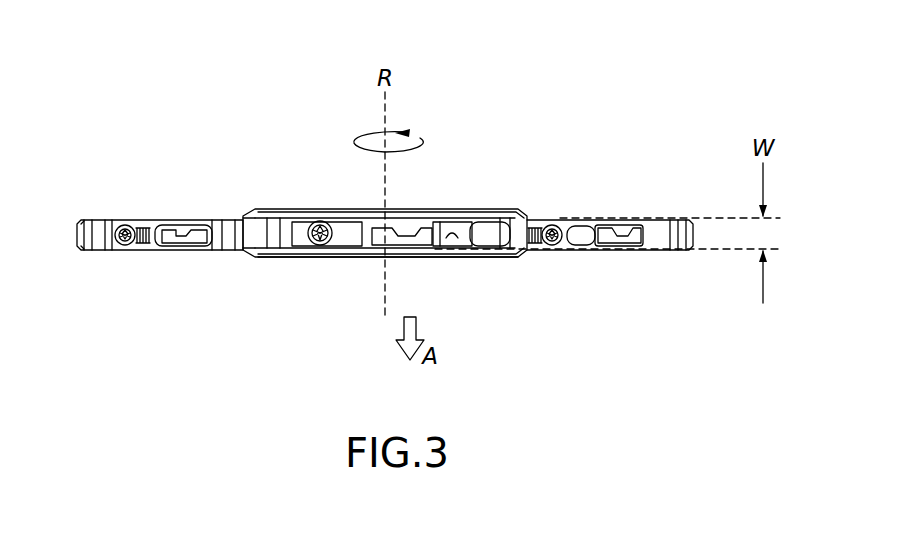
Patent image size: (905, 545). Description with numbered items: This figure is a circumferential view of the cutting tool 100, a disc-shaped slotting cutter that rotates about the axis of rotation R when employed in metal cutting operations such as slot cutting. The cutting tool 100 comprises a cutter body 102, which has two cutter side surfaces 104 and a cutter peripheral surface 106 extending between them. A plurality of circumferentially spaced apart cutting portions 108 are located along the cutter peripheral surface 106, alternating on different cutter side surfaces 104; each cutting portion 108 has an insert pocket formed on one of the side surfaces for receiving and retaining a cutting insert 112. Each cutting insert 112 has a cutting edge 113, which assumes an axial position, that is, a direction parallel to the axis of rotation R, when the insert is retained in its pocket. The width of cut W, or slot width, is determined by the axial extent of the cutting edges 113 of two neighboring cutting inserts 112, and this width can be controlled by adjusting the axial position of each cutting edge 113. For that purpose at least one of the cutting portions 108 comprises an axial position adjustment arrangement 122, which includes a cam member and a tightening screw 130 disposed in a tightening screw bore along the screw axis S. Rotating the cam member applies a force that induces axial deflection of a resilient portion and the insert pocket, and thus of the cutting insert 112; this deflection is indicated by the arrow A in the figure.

The cutting tool 100 is at (221, 80).
The cutter body 102 is at (266, 188).
The cutter side surfaces 104 is at (93, 212).
The cutter peripheral surface 106 is at (570, 237).
The cutting portions 108 is at (463, 183).
The cutting insert 112 is at (158, 212).
The cutting edge 113 is at (218, 213).
The axial position adjustment arrangement 122 is at (352, 300).
The tightening screw 130 is at (307, 253).